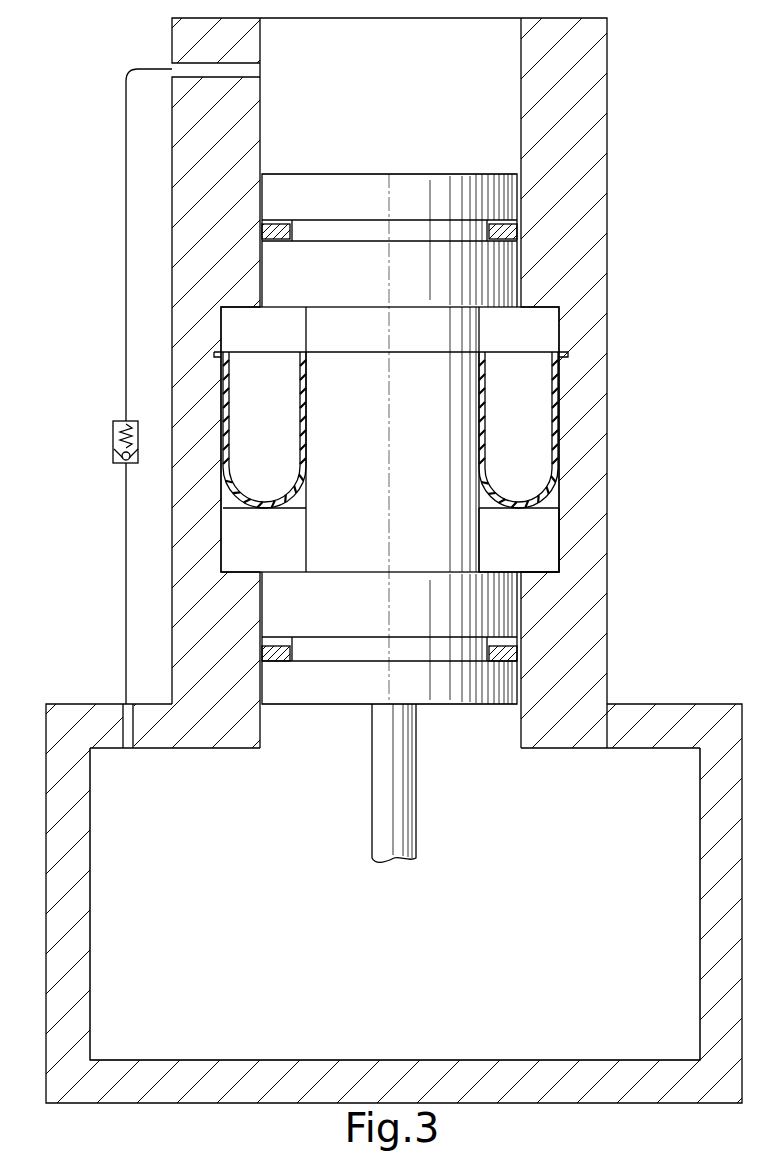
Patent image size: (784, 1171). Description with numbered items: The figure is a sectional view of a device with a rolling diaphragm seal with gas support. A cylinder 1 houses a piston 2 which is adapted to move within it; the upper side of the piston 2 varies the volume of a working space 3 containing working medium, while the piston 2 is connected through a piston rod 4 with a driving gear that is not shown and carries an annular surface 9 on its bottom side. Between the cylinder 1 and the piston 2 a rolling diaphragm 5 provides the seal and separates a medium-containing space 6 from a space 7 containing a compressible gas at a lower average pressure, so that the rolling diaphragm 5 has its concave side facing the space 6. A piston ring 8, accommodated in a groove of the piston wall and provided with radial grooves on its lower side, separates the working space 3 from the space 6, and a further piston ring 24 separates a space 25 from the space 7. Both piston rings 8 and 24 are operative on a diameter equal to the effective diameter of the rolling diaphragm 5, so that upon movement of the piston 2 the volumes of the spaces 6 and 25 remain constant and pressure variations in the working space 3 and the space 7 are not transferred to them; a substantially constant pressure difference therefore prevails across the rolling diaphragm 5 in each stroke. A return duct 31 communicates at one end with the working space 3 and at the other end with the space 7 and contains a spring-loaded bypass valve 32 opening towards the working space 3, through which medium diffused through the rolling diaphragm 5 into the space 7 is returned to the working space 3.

The cylinder 1 is at (585, 184).
The piston 2 is at (470, 258).
The working space 3 is at (394, 94).
The piston rod 4 is at (397, 834).
The rolling diaphragm 5 is at (592, 518).
The medium-containing space 6 is at (527, 413).
The space containing compressible medium 7 is at (547, 906).
The piston ring 8 is at (262, 230).
The annular surface 9 is at (466, 706).
The piston ring 24 is at (262, 652).
The space 25 is at (522, 548).
The return duct 31 is at (126, 555).
The bypass valve 32 is at (113, 440).